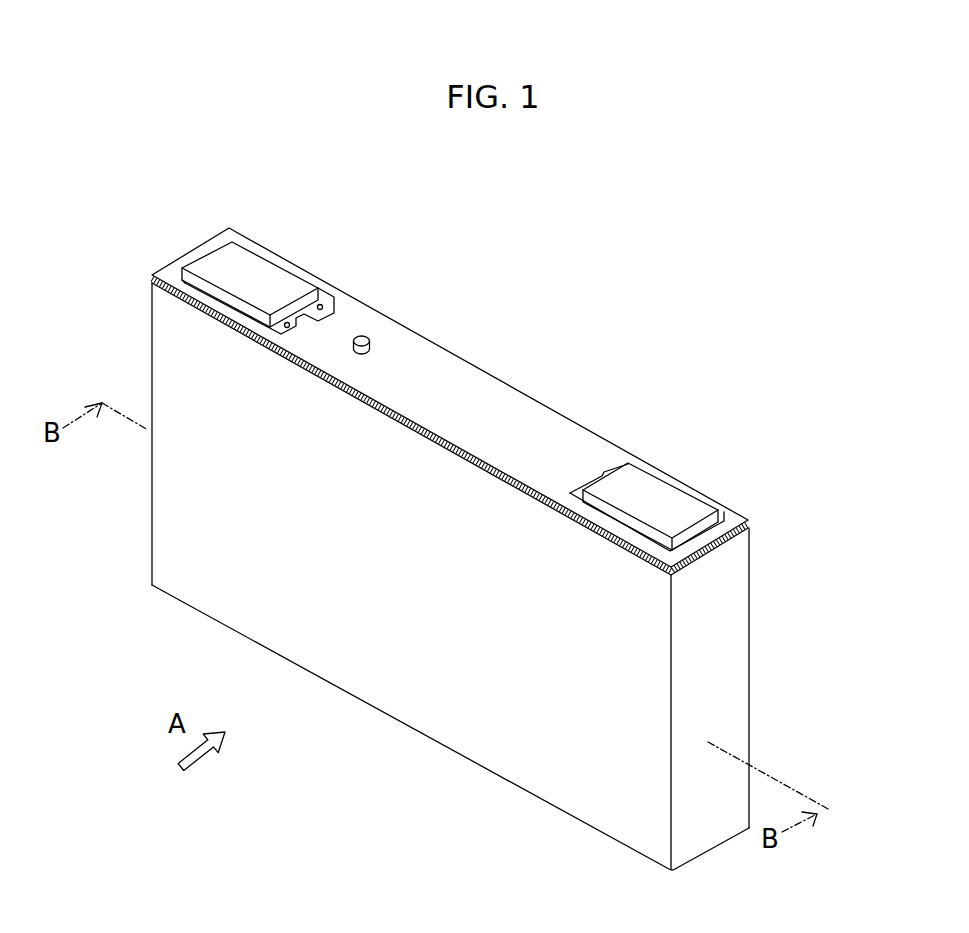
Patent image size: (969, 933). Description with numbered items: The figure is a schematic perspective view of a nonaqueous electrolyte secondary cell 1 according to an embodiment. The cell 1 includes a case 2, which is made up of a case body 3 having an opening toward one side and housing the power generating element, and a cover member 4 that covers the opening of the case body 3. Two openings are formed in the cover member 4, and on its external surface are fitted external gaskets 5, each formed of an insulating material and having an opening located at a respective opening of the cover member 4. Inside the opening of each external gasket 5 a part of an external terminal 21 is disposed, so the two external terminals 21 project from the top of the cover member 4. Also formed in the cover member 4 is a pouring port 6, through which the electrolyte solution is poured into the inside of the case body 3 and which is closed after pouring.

The nonaqueous electrolyte secondary cell 1 is at (560, 307).
The case 2 is at (853, 548).
The case body 3 is at (725, 612).
The cover member 4 is at (703, 540).
The external gasket 5 is at (202, 283).
The pouring port 6 is at (364, 338).
The external terminal 21 is at (232, 255).